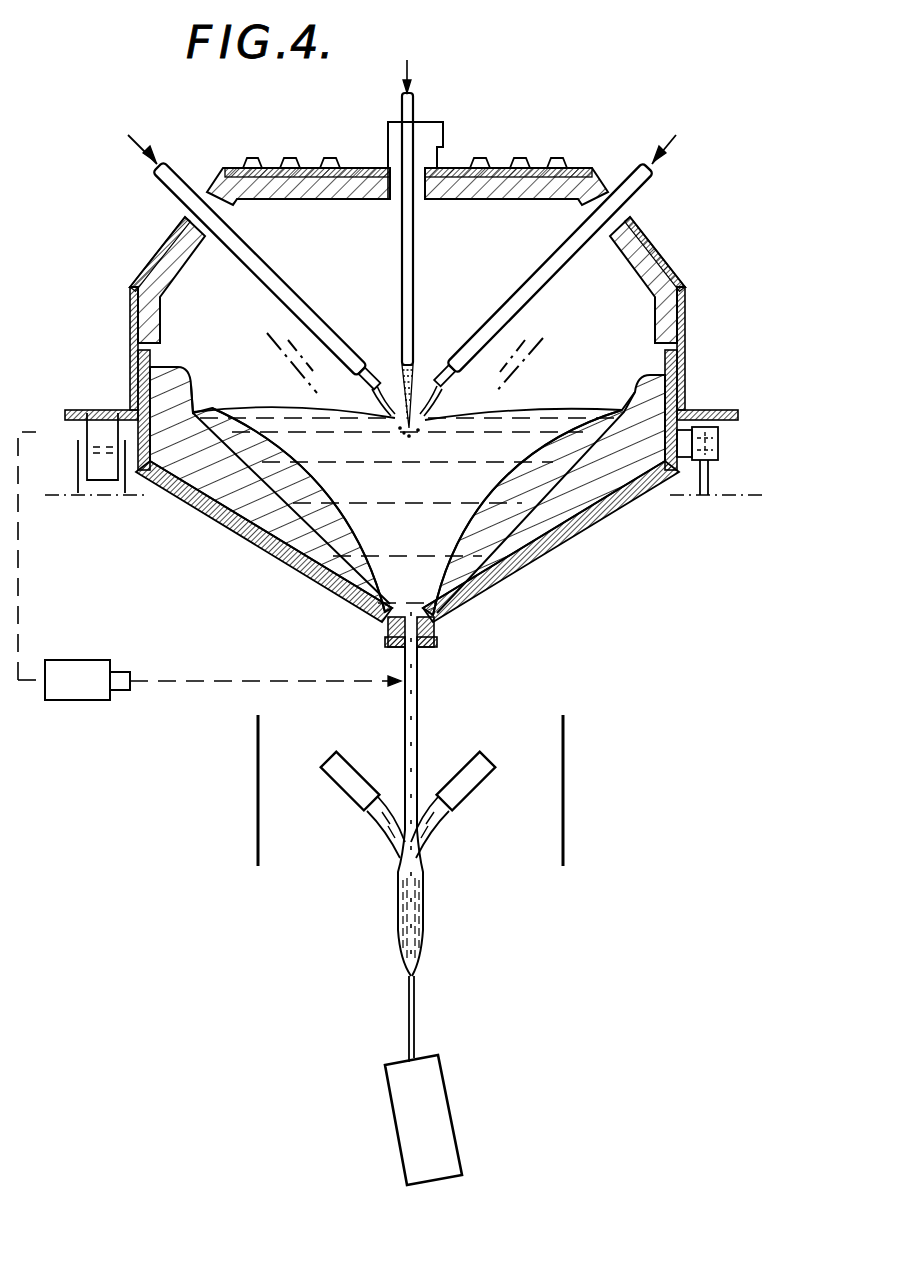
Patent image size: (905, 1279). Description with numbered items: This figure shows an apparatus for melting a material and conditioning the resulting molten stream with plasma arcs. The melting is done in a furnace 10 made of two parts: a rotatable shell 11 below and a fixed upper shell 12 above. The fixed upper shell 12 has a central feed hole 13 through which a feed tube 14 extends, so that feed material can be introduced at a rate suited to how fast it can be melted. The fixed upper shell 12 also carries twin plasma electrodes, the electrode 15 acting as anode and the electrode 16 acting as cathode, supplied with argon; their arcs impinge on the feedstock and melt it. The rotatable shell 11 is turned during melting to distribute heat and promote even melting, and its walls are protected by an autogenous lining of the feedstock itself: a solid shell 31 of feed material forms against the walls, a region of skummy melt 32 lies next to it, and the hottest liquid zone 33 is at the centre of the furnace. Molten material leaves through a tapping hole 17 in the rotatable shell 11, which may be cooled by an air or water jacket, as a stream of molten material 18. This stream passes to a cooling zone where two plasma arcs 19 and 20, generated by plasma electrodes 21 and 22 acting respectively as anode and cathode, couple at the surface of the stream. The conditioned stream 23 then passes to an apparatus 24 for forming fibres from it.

The furnace 10 is at (104, 326).
The rotatable shell 11 is at (561, 517).
The fixed upper shell 12 is at (683, 312).
The central feed hole 13 is at (425, 178).
The feed tube 14 is at (403, 295).
The plasma electrode (anode) 15 is at (253, 258).
The plasma electrode (cathode) 16 is at (556, 256).
The tapping hole 17 is at (440, 633).
The stream of molten material 18 is at (420, 668).
The plasma arc 19 is at (387, 835).
The plasma arc 20 is at (432, 835).
The plasma electrode (anode) 21 is at (338, 762).
The plasma electrode (cathode) 22 is at (466, 766).
The conditioned stream 23 is at (415, 998).
The apparatus for the formation of fibres 24 is at (440, 1115).
The solid shell of feed material 31 is at (278, 535).
The region of skummy melt 32 is at (243, 472).
The hottest liquid zone 33 is at (308, 566).